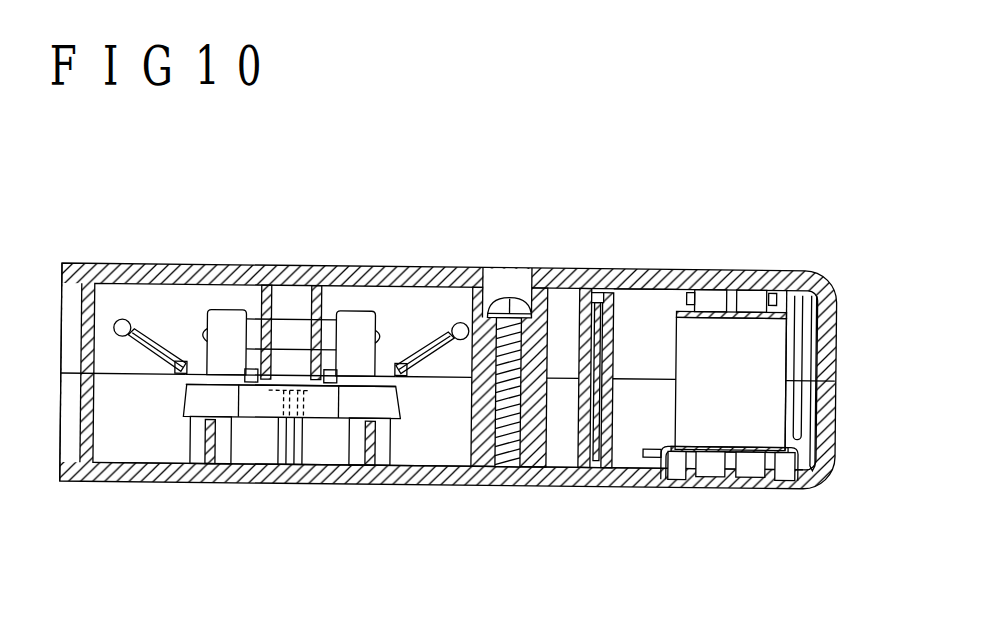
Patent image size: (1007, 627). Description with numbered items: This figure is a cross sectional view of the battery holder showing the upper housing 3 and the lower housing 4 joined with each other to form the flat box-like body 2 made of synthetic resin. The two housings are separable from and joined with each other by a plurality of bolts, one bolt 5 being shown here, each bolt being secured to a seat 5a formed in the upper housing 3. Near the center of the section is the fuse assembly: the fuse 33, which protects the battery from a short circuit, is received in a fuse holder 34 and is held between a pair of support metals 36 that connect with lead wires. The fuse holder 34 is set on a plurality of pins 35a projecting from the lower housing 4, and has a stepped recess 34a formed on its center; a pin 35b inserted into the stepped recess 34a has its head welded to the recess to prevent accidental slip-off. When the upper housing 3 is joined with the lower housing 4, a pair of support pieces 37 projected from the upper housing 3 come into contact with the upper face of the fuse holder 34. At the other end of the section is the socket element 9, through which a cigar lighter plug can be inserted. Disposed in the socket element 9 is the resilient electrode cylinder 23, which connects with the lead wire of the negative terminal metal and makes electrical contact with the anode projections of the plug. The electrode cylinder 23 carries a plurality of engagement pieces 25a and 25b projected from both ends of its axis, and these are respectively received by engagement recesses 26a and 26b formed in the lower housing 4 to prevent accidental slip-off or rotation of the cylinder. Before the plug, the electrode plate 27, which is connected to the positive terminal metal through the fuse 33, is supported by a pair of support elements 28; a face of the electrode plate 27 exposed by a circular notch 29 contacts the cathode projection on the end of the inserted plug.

The body 2 is at (185, 263).
The upper housing 3 is at (150, 263).
The lower housing 4 is at (155, 481).
The bolt 5 is at (509, 293).
The seat 5a is at (540, 292).
The socket element 9 is at (841, 345).
The electrode cylinder 23 is at (713, 302).
The engagement piece 25a is at (807, 481).
The engagement piece 25b is at (668, 481).
The engagement recess 26a is at (788, 481).
The engagement recess 26b is at (682, 481).
The electrode plate 27 is at (602, 481).
The support element 28 is at (587, 291).
The circular notch 29 is at (620, 333).
The fuse 33 is at (292, 320).
The fuse holder 34 is at (265, 417).
The stepped recess 34a is at (307, 397).
The pin 35a is at (199, 481).
The pin 35b is at (300, 481).
The support metal 36 is at (228, 308).
The support piece 37 is at (267, 300).